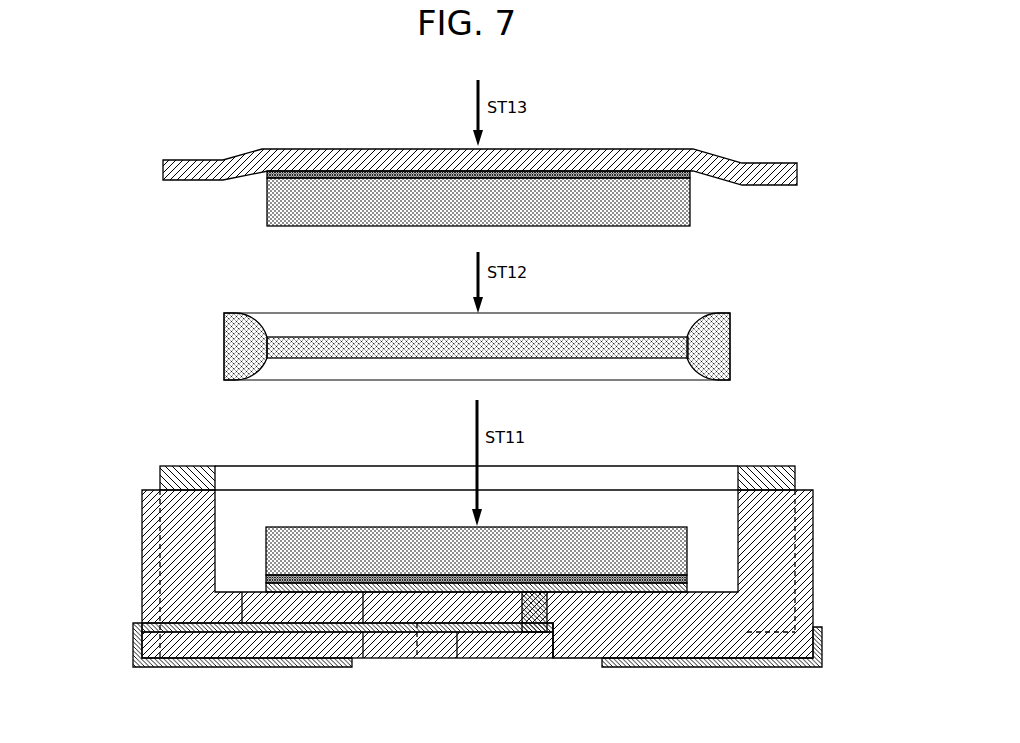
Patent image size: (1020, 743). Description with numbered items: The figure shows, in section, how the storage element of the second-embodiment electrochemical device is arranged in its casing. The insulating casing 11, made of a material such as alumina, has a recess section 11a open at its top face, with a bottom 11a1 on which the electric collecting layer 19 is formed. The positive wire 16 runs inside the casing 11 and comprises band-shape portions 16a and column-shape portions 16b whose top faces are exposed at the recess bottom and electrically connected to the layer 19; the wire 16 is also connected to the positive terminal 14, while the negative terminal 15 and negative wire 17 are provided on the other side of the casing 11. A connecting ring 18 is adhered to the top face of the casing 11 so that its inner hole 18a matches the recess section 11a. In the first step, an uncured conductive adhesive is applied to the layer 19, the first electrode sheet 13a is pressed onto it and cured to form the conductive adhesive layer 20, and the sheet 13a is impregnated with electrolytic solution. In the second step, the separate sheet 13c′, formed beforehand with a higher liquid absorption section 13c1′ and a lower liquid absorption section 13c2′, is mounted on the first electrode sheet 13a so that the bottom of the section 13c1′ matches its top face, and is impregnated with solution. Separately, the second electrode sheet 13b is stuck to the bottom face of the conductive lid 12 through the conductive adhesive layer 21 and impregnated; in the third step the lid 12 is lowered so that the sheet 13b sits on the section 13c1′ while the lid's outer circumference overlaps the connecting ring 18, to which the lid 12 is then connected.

The conductive lid 12 is at (163, 172).
The conductive adhesive layer 21 is at (652, 170).
The second electrode sheet 13b is at (386, 200).
The separate sheet 13c′ is at (392, 338).
The lower liquid absorption section 13c2′ is at (240, 340).
The higher liquid absorption section 13c1′ is at (568, 345).
The insulating casing 11 is at (142, 528).
The recess section 11a is at (230, 568).
The cavity bottom 11a1 is at (242, 607).
The conductive adhesive layer 20 is at (653, 597).
The positive wire 16 is at (193, 636).
The band-shape portions 16a is at (458, 660).
The column-shape portions 16b is at (417, 660).
The electric collecting layer 19 is at (366, 660).
The positive terminal 14 is at (148, 668).
The negative terminal 15 is at (807, 670).
The negative wire 17 is at (768, 635).
The connecting ring 18 is at (160, 477).
The inner hole 18a is at (232, 477).
The first electrode sheet 13a is at (385, 540).